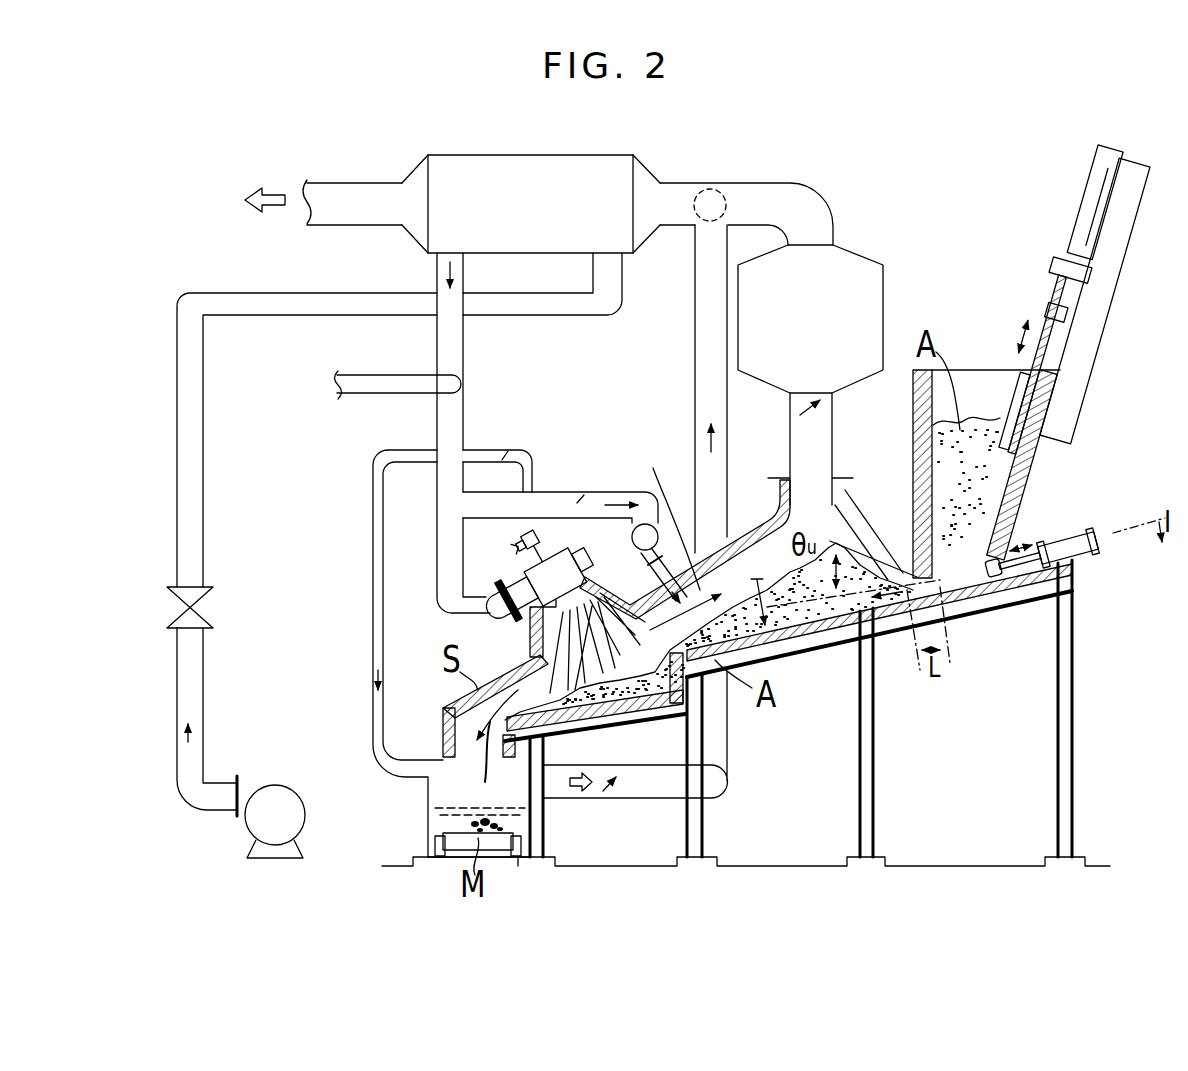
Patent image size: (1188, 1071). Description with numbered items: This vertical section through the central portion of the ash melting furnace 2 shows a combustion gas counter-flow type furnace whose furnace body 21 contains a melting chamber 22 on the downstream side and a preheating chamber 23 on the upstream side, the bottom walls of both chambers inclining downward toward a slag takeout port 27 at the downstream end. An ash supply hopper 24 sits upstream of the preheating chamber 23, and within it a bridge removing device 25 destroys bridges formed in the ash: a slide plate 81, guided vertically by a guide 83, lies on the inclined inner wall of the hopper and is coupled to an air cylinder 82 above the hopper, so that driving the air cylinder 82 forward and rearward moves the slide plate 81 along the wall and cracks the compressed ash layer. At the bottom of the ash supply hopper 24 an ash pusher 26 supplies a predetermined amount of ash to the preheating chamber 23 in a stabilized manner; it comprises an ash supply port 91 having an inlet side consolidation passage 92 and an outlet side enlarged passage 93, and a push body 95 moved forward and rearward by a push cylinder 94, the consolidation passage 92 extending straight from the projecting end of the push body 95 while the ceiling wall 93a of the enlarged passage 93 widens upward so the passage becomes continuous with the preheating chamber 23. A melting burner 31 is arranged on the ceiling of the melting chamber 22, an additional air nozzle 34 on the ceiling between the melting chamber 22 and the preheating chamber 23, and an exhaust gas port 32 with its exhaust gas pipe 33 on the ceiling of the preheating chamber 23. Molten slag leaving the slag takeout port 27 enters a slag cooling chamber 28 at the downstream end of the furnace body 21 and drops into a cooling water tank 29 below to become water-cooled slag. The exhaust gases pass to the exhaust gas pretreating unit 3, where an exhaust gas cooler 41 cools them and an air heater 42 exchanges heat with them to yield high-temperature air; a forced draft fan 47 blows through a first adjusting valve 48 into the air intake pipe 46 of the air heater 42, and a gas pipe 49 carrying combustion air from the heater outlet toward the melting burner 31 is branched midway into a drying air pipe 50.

The ash melting furnace 2 is at (678, 457).
The exhaust gas pretreating unit 3 is at (667, 179).
The furnace body 21 is at (711, 544).
The melting chamber 22 is at (625, 663).
The preheating chamber 23 is at (785, 563).
The ash supply hopper 24 is at (976, 368).
The bridge removing device 25 is at (1043, 289).
The ash pusher 26 is at (1013, 578).
The slag takeout port 27 is at (445, 702).
The slag cooling chamber 28 is at (440, 792).
The cooling water tank 29 is at (520, 820).
The melting burner 31 is at (570, 562).
The exhaust gas port 32 is at (812, 517).
The exhaust gas pipe 33 is at (822, 417).
The additional air nozzle 34 is at (665, 490).
The exhaust gas cooler 41 is at (828, 318).
The air heater 42 is at (548, 213).
The air intake pipe 46 is at (205, 498).
The forced draft fan 47 is at (284, 786).
The first adjusting valve 48 is at (210, 602).
The gas pipe 49 is at (463, 349).
The drying air pipe 50 is at (375, 397).
The slide plate 81 is at (1094, 331).
The air cylinder 82 is at (1090, 200).
The guide 83 is at (1020, 388).
The ash supply port 91 is at (922, 708).
The consolidation passage 92 is at (912, 596).
The enlarged passage 93 is at (860, 640).
The ceiling wall 93a is at (892, 575).
The push cylinder 94 is at (1078, 556).
The push body 95 is at (988, 583).